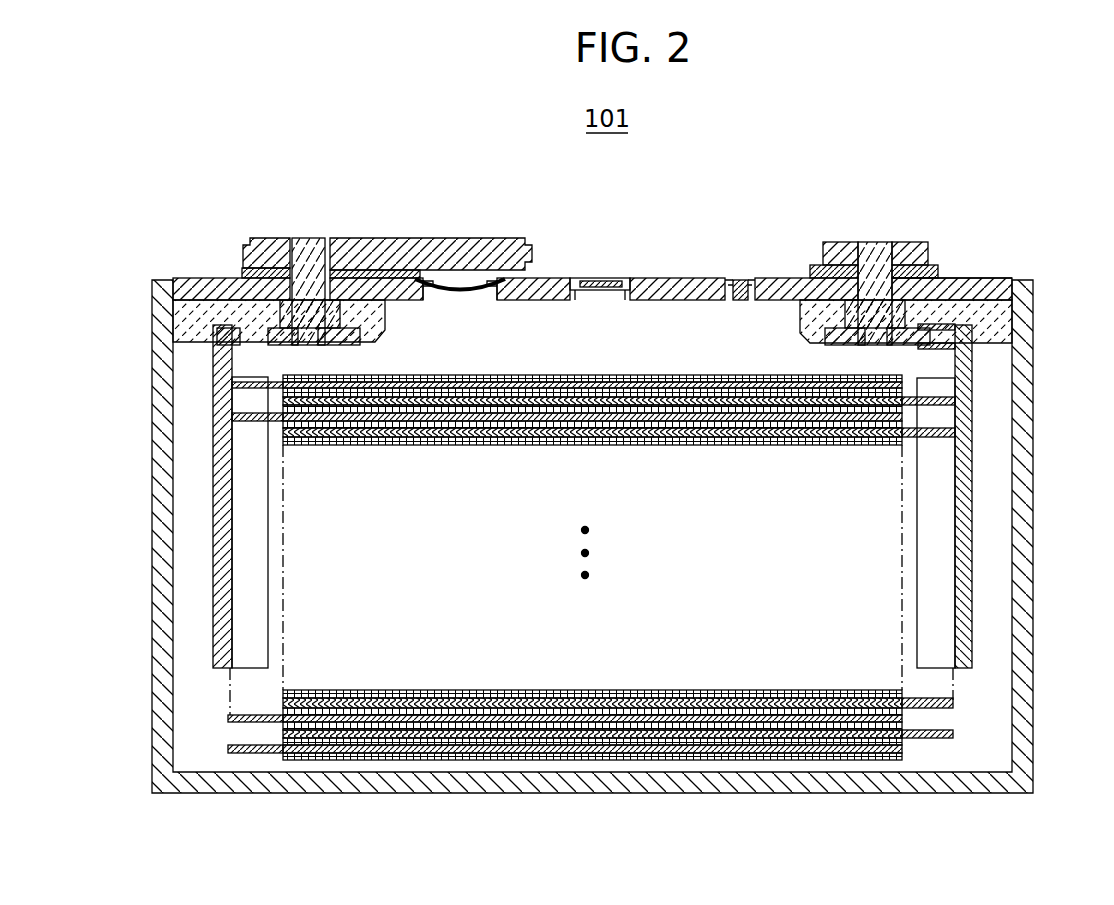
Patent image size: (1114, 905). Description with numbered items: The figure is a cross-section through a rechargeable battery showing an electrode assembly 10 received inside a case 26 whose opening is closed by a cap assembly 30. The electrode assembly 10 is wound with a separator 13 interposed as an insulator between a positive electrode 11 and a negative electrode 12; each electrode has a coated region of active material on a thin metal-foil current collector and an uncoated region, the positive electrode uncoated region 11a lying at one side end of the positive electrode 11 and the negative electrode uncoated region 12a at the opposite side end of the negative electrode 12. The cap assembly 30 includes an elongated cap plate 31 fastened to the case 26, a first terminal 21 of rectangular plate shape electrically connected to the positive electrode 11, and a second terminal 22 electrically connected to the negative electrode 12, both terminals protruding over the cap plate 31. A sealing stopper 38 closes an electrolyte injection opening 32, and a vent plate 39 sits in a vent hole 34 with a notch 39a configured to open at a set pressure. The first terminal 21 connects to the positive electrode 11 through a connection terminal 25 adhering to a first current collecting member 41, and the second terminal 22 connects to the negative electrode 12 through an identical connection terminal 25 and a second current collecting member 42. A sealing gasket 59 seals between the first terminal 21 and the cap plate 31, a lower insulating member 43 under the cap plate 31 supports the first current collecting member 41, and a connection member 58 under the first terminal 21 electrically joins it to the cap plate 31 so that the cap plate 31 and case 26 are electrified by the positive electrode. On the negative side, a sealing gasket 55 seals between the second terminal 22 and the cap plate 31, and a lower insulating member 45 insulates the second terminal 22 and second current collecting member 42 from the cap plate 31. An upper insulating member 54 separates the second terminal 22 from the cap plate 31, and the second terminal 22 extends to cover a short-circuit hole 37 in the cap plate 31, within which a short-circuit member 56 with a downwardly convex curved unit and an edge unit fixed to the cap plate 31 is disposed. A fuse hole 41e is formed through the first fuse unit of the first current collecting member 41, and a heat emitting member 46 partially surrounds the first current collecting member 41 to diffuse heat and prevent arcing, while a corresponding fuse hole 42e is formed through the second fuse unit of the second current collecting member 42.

The electrode assembly 10 is at (590, 611).
The positive electrode 11 is at (797, 738).
The positive electrode uncoated region 11a is at (933, 738).
The negative electrode 12 is at (378, 722).
The negative electrode uncoated region 12a is at (245, 753).
The separator 13 is at (598, 723).
The first terminal 21 is at (912, 250).
The second terminal 22 is at (270, 250).
The connection terminal 25 is at (310, 245).
The case 26 is at (1033, 580).
The cap assembly 30 is at (556, 278).
The cap plate 31 is at (992, 284).
The electrolyte injection opening 32 is at (740, 301).
The vent hole 34 is at (598, 301).
The short-circuit hole 37 is at (432, 284).
The sealing stopper 38 is at (742, 282).
The vent plate 39 is at (625, 282).
The notch 39a is at (600, 282).
The first current collecting member 41 is at (975, 450).
The fuse hole 41e is at (963, 340).
The second current collecting member 42 is at (225, 400).
The fuse hole 42e is at (240, 300).
The lower insulating member 43 is at (990, 322).
The lower insulating member 45 is at (200, 330).
The heat emitting member 46 is at (960, 374).
The upper insulating member 54 is at (530, 248).
The sealing gasket 55 is at (233, 290).
The short-circuit member 56 is at (462, 290).
The connection member 58 is at (930, 272).
The sealing gasket 59 is at (828, 300).